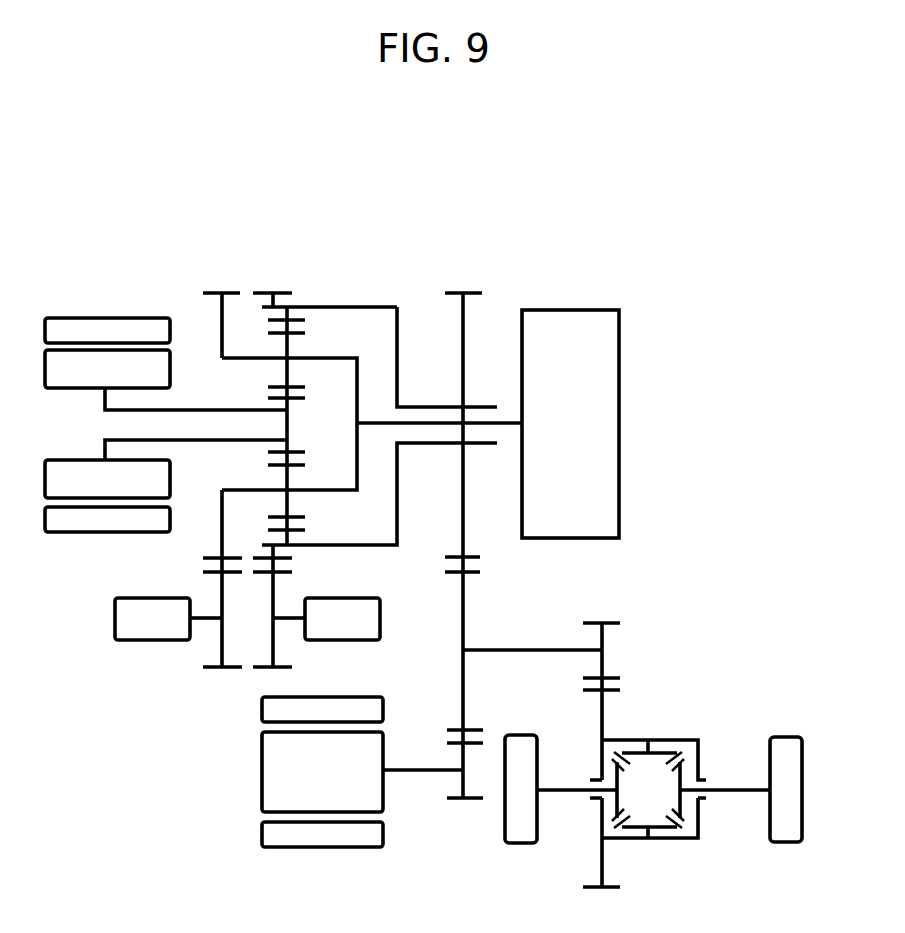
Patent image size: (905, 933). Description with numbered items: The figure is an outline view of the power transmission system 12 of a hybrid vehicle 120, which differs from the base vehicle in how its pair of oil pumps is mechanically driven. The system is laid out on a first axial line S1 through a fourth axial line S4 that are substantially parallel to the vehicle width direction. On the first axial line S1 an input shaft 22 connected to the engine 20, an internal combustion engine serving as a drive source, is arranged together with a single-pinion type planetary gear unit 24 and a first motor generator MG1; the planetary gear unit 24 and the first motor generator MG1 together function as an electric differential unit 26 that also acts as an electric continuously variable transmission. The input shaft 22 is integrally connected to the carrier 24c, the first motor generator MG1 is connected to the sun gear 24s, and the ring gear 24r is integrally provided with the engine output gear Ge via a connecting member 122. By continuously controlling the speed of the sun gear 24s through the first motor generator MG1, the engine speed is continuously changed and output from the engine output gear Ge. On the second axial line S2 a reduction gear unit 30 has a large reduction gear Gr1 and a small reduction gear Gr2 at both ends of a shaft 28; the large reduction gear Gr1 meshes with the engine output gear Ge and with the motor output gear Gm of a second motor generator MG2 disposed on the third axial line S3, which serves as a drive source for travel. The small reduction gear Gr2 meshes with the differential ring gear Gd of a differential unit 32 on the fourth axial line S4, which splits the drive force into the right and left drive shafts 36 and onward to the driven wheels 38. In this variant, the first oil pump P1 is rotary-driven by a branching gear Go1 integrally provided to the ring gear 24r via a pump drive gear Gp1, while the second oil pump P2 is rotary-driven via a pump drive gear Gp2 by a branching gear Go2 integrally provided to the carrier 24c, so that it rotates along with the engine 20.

The power transmission system 12 is at (130, 218).
The hybrid vehicle 120 is at (492, 177).
The electric differential unit 26 is at (320, 243).
The engine 20 is at (608, 373).
The connecting member 122 is at (397, 370).
The input shaft 22 is at (430, 430).
The planetary gear unit 24 is at (210, 507).
The carrier 24c is at (307, 358).
The sun gear 24s is at (270, 397).
The ring gear 24r is at (305, 530).
The shaft 28 is at (523, 653).
The reduction gear unit 30 is at (673, 637).
The differential unit 32 is at (685, 860).
The drive shafts 36 is at (563, 795).
The driven wheels 38 is at (520, 832).
The branching gear Go1 is at (282, 292).
The branching gear Go2 is at (215, 293).
The engine output gear Ge is at (463, 293).
The large reduction gear Gr1 is at (478, 570).
The small reduction gear Gr2 is at (607, 622).
The differential ring gear Gd is at (615, 690).
The pump drive gear Gp1 is at (280, 668).
The pump drive gear Gp2 is at (217, 668).
The motor output gear Gm is at (457, 802).
The first motor generator MG1 is at (107, 411).
The second motor generator MG2 is at (322, 785).
The first axial line S1 is at (158, 424).
The second axial line S2 is at (512, 671).
The third axial line S3 is at (344, 772).
The fourth axial line S4 is at (828, 792).
The first oil pump P1 is at (326, 619).
The second oil pump P2 is at (168, 619).